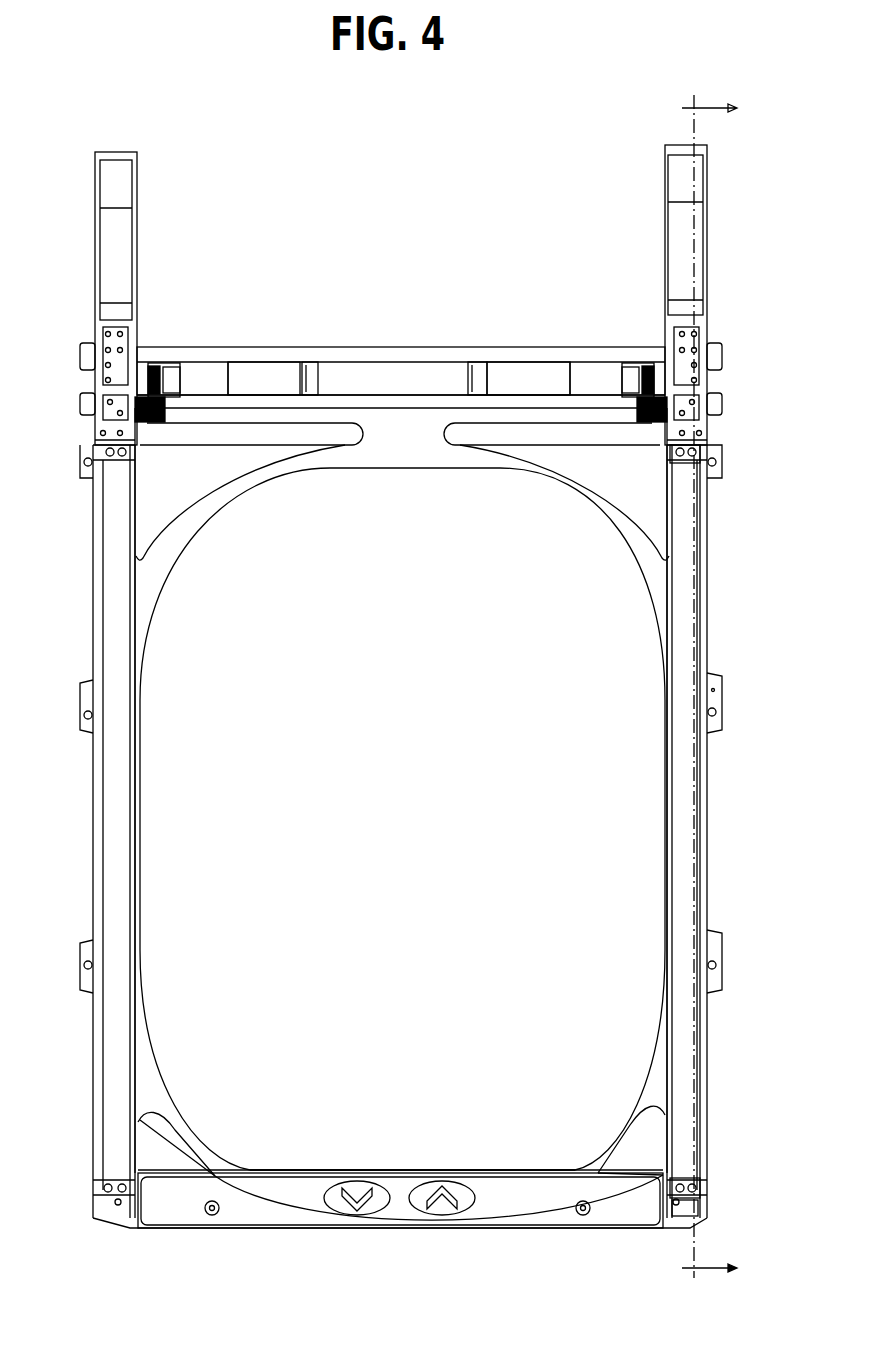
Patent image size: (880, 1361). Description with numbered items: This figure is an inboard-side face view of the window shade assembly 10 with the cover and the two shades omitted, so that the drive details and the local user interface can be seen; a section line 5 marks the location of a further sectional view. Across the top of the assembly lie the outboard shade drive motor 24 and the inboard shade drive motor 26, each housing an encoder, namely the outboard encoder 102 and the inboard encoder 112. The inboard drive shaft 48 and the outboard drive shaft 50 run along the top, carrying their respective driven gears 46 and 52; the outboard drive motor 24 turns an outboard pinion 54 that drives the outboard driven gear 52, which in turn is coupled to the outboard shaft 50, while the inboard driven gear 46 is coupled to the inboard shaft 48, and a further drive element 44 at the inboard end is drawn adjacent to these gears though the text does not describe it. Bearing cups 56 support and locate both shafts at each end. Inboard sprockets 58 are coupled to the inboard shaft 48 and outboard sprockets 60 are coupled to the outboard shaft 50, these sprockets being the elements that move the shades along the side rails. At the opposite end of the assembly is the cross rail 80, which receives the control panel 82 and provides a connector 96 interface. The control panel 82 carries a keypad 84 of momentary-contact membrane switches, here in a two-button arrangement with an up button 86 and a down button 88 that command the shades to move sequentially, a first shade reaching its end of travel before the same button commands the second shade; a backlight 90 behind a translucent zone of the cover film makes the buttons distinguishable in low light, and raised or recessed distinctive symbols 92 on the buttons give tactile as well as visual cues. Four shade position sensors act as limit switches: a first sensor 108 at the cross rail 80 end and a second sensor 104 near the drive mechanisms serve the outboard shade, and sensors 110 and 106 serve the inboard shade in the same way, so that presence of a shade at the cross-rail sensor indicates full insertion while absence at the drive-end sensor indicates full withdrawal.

The section line 5 is at (719, 689).
The window shade assembly 10 is at (441, 182).
The outboard shade drive motor 24 is at (492, 368).
The inboard shade drive motor 26 is at (262, 372).
The left end block 44 is at (172, 363).
The inboard driven gear 46 is at (138, 420).
The inboard drive shaft 48 is at (203, 400).
The outboard drive shaft 50 is at (512, 368).
The outboard driven gear 52 is at (633, 348).
The outboard pinion 54 is at (605, 366).
The bearing cups 56 is at (85, 378).
The inboard sprockets 58 is at (135, 425).
The outboard sprockets 60 is at (136, 346).
The cross rail 80 is at (132, 1228).
The control panel 82 is at (268, 1176).
The keypad 84 is at (397, 1150).
The up button 86 is at (472, 1185).
The down button 88 is at (326, 1185).
The backlight 90 is at (512, 1160).
The distinctive symbols 92 is at (360, 1188).
The connector 96 is at (625, 1240).
The outboard encoder 102 is at (480, 370).
The top-of-travel detector for outboard shade 104 is at (668, 482).
The top-of-travel detector for inboard shade 106 is at (674, 470).
The bottom-of-travel detector for outboard shade 108 is at (700, 1195).
The bottom-of-travel detector for inboard shade 110 is at (688, 1176).
The inboard encoder 112 is at (312, 368).